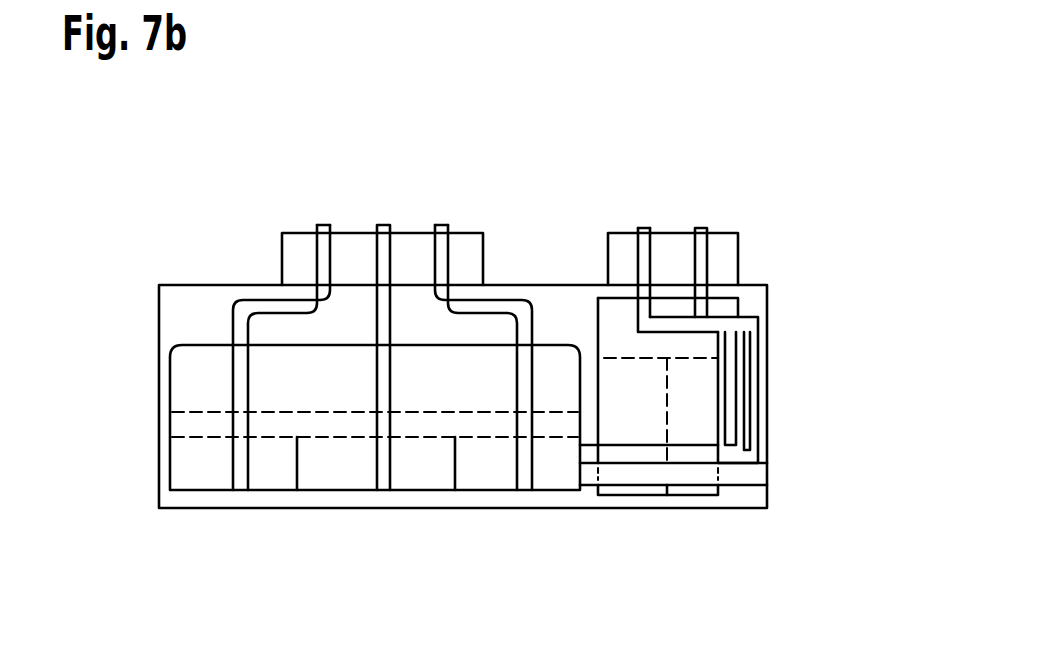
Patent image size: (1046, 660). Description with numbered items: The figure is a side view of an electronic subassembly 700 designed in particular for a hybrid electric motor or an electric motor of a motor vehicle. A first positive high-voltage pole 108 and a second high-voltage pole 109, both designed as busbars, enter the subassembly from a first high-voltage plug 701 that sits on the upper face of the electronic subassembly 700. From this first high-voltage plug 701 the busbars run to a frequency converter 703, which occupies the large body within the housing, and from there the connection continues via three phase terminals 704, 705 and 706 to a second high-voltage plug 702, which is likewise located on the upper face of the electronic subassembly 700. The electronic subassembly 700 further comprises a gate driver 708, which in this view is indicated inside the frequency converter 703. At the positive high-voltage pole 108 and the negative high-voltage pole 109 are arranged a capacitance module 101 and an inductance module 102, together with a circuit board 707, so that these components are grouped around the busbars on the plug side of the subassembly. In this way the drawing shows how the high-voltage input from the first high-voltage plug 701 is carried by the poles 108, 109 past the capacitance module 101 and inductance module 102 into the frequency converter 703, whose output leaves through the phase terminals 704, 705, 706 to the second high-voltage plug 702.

The electronic subassembly 700 is at (772, 199).
The first high-voltage plug 701 is at (673, 230).
The second high-voltage plug 702 is at (413, 245).
The frequency converter 703 is at (187, 375).
The phase terminal 704 is at (203, 472).
The phase terminal 705 is at (327, 472).
The phase terminal 706 is at (480, 475).
The circuit board 707 is at (698, 475).
The gate driver 708 is at (187, 425).
The capacitance module 101 is at (730, 308).
The inductance module 102 is at (683, 450).
The first positive high-voltage pole 108 is at (705, 225).
The second high-voltage pole 109 is at (643, 225).